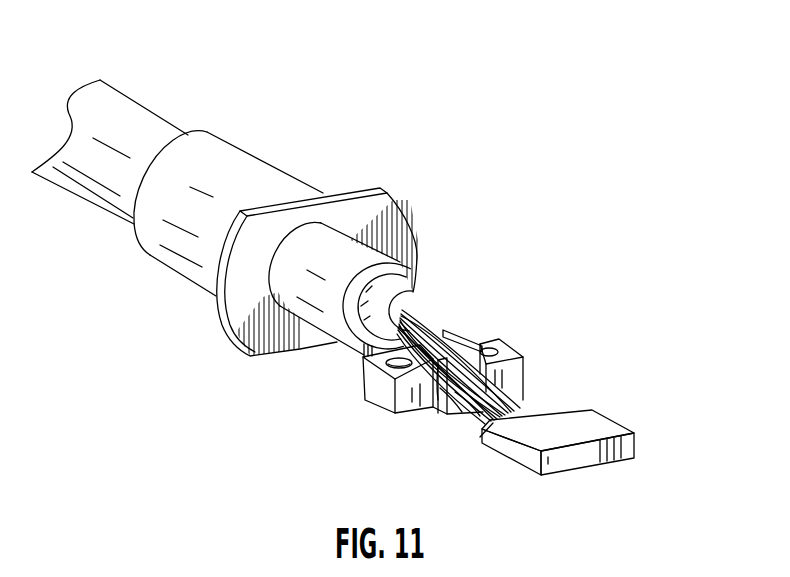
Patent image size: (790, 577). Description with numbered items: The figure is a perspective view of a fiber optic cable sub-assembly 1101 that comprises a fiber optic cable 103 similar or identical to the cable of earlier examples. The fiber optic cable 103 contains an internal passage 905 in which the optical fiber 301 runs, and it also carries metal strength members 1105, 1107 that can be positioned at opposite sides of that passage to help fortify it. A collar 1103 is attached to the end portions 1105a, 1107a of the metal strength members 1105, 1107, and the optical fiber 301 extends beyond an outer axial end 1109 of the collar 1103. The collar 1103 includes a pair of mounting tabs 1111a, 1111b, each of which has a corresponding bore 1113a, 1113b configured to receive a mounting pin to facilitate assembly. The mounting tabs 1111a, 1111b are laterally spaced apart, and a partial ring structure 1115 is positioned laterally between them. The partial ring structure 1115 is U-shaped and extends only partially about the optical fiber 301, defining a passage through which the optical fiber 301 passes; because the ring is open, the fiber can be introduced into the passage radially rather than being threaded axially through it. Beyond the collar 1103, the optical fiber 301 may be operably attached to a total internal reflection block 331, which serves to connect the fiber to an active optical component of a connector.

The fiber optic cable 103 is at (110, 125).
The fiber optic cable sub-assembly 1101 is at (433, 163).
The collar 1103 is at (500, 343).
The metal strength member 1105 is at (408, 306).
The end portion 1105a is at (452, 402).
The metal strength member 1107 is at (488, 350).
The end portion 1107a is at (520, 305).
The outer axial end 1109 is at (416, 410).
The mounting tab 1111a is at (372, 378).
The mounting tab 1111b is at (525, 400).
The bore 1113a is at (338, 340).
The bore 1113b is at (523, 367).
The partial ring structure 1115 is at (455, 400).
The optical fiber 301 is at (518, 408).
The total internal reflection block 331 is at (593, 428).
The internal passage 905 is at (446, 335).